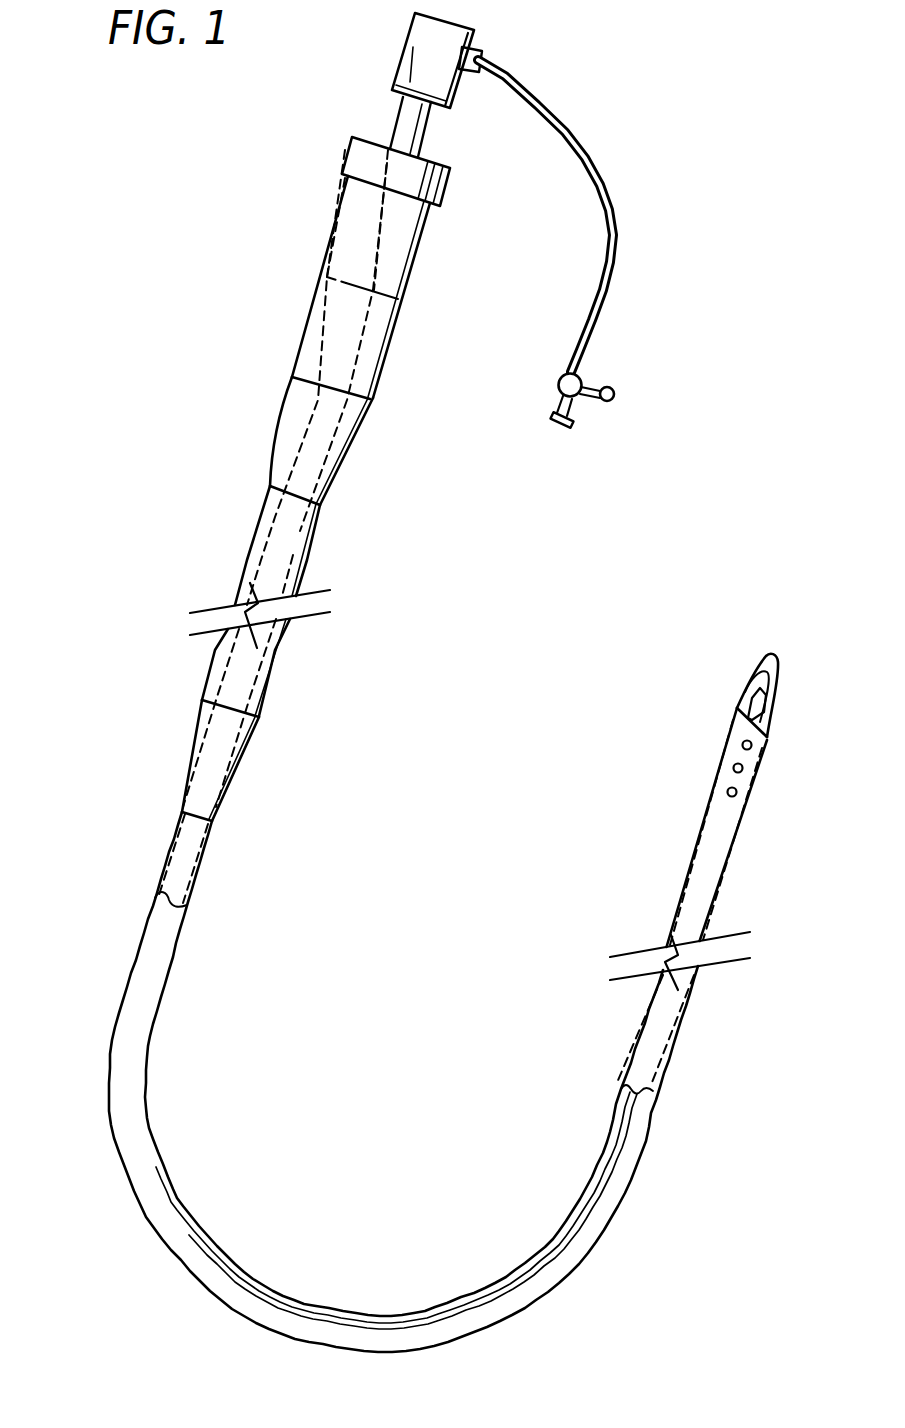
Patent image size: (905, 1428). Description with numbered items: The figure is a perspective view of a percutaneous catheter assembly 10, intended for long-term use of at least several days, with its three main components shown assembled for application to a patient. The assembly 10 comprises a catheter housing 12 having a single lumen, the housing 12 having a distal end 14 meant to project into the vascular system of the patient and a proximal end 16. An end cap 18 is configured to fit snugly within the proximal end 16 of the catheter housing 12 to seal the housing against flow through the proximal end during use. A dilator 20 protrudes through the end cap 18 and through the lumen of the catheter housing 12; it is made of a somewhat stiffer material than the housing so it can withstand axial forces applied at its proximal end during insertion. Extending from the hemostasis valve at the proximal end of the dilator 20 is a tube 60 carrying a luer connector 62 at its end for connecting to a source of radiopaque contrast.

The percutaneous catheter assembly 10 is at (141, 384).
The catheter housing 12 is at (233, 563).
The distal end 14 is at (740, 827).
The proximal end 16 is at (337, 216).
The end cap 18 is at (345, 252).
The dilator 20 is at (297, 537).
The tube 60 is at (600, 231).
The luer connector 62 is at (560, 430).